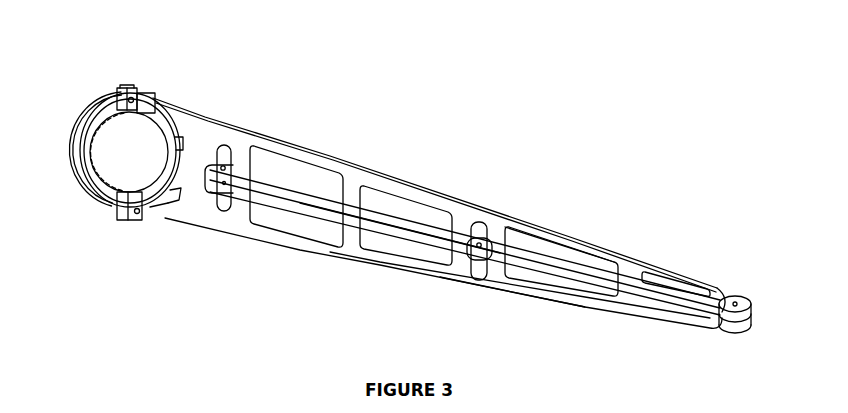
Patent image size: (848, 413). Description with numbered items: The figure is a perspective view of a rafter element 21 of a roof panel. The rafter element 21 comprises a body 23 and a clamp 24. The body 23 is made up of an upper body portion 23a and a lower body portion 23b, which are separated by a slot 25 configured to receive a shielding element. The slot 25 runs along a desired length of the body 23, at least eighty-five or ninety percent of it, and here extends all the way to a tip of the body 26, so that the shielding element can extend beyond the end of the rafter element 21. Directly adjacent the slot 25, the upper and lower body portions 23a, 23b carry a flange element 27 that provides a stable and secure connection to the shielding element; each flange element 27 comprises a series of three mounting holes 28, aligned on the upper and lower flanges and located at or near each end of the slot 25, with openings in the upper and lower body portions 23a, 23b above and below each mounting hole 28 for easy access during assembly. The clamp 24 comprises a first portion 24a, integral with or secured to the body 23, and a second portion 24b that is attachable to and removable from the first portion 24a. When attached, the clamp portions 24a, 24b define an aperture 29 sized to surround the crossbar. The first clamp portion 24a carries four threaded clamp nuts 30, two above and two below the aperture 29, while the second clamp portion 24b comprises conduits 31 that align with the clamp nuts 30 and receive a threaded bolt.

The rafter element 21 is at (659, 176).
The body 23 is at (402, 185).
The upper body portion 23a is at (533, 232).
The lower body portion 23b is at (540, 291).
The clamp 24 is at (155, 108).
The first portion 24a is at (165, 200).
The second portion 24b is at (83, 122).
The slot 25 is at (270, 190).
The tip of the body 26 is at (758, 320).
The flange element 27 is at (428, 218).
The mounting hole 28 is at (480, 240).
The aperture 29 is at (127, 165).
The threaded clamp nut 30 is at (133, 220).
The conduit 31 is at (120, 92).